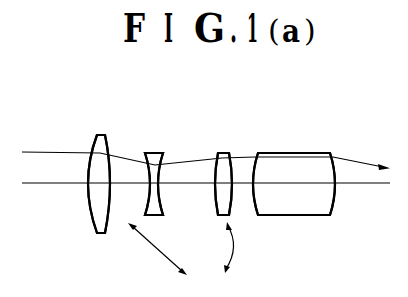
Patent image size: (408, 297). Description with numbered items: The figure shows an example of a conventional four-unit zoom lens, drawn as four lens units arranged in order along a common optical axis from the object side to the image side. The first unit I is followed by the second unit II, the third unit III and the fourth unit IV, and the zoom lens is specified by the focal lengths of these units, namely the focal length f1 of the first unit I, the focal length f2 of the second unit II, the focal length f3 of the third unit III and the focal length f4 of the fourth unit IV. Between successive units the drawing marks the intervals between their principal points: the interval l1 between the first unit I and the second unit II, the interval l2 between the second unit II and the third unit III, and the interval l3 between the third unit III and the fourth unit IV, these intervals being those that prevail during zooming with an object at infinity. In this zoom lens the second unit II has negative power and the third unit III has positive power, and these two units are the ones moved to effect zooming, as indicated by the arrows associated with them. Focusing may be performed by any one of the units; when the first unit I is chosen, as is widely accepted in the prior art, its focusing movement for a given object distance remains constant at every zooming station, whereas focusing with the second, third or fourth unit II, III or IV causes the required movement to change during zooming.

The first unit I is at (98, 133).
The second unit II is at (151, 150).
The third unit III is at (217, 150).
The fourth unit IV is at (294, 152).
The focal length of the first unit f1 is at (101, 236).
The focal length of the second unit f2 is at (163, 211).
The focal length of the third unit f3 is at (220, 201).
The focal length of the fourth unit f4 is at (294, 213).
The interval between the first and second units l1 is at (125, 178).
The interval between the second and third units l2 is at (188, 180).
The interval between the third and fourth units l3 is at (242, 178).